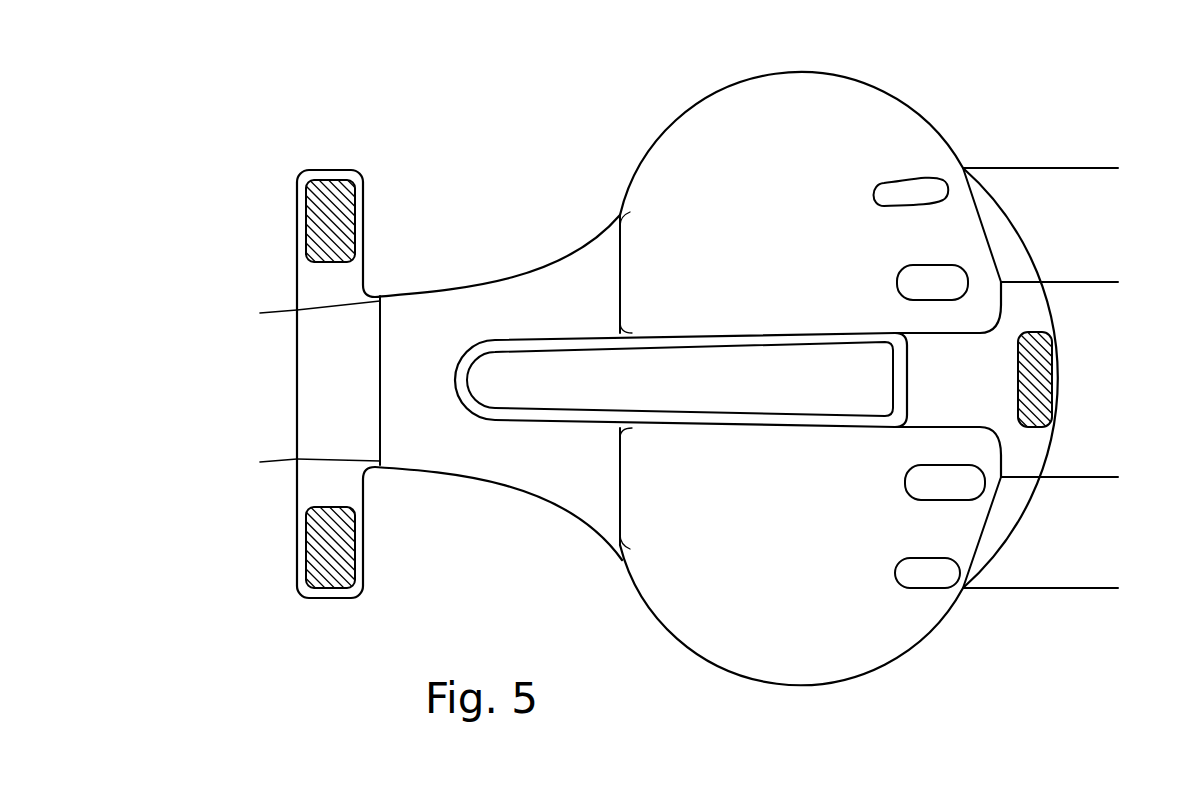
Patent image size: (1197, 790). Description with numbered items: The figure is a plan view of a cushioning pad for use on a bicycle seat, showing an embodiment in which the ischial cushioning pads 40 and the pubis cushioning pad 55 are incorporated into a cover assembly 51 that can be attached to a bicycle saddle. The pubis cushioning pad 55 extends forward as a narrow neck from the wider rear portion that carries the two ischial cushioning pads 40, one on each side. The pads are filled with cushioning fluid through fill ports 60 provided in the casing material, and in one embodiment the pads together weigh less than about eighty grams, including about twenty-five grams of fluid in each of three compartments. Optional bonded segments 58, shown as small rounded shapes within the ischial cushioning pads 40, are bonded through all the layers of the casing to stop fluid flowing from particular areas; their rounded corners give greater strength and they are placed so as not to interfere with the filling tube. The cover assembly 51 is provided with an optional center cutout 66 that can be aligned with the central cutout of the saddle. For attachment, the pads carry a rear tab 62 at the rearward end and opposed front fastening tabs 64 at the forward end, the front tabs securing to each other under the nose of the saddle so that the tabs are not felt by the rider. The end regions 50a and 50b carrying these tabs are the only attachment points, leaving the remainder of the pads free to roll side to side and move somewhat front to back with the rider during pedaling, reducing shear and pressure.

The cover assembly 51 is at (590, 114).
The ischial cushioning pads 40 is at (769, 204).
The first end flange 50a is at (297, 402).
The second end flange 50b is at (1055, 427).
The pubis cushioning pad 55 is at (509, 455).
The bonded segments 58 is at (885, 208).
The fill ports 60 is at (260, 432).
The rear tab 62 is at (1052, 363).
The front fastening tabs 64 is at (308, 212).
The center cutout 66 is at (706, 391).